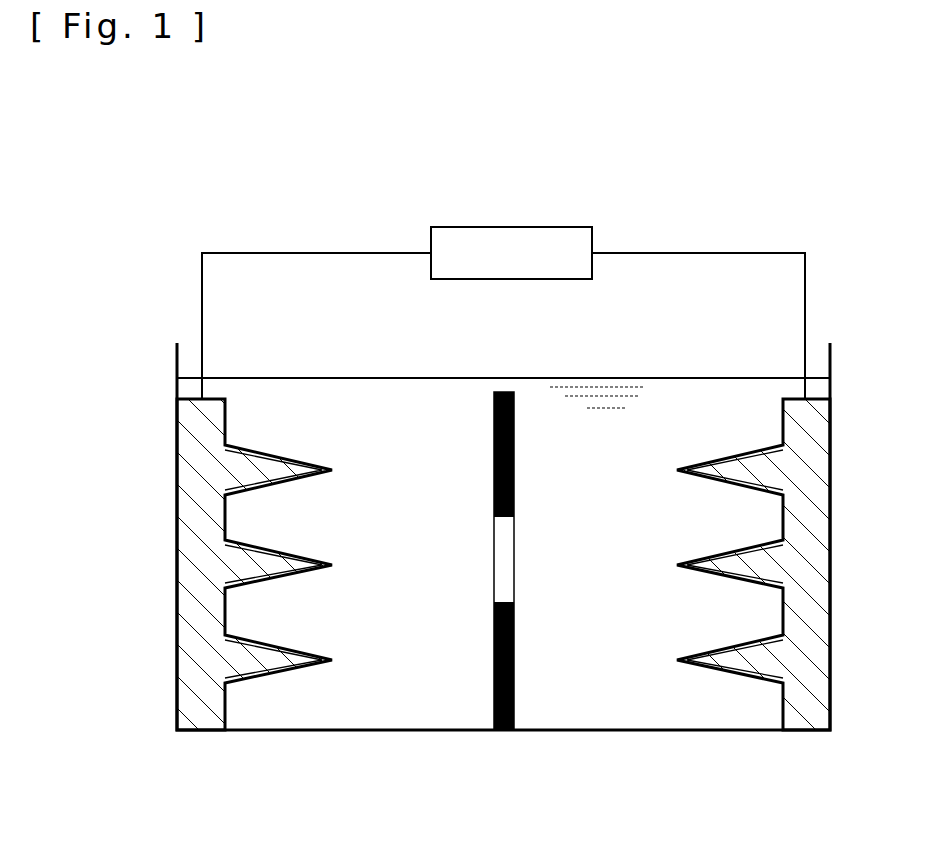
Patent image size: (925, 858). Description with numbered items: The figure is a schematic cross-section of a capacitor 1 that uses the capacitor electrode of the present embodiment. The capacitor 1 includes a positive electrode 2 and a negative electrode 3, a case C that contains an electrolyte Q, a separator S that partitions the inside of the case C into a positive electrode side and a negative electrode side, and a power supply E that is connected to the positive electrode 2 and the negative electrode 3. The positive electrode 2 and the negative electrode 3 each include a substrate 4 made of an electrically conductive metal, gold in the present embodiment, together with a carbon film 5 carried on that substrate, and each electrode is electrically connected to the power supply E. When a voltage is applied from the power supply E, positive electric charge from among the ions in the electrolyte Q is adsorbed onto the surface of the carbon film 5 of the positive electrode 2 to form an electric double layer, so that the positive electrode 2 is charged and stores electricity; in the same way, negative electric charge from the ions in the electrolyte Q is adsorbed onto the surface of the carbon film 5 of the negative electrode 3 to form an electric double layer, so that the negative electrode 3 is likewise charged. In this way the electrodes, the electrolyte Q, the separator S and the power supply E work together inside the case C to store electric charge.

The capacitor 1 is at (168, 236).
The positive electrode 2 is at (297, 392).
The negative electrode 3 is at (718, 390).
The substrate 4 is at (198, 733).
The carbon film 5 is at (277, 453).
The power supply E is at (518, 266).
The case C is at (334, 733).
The separator S is at (502, 733).
The electrolyte Q is at (568, 461).